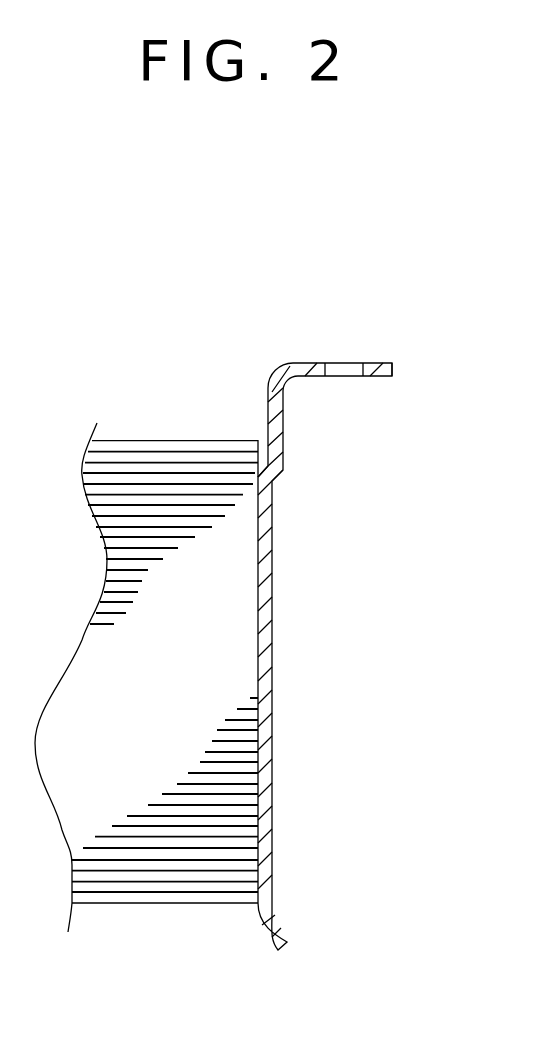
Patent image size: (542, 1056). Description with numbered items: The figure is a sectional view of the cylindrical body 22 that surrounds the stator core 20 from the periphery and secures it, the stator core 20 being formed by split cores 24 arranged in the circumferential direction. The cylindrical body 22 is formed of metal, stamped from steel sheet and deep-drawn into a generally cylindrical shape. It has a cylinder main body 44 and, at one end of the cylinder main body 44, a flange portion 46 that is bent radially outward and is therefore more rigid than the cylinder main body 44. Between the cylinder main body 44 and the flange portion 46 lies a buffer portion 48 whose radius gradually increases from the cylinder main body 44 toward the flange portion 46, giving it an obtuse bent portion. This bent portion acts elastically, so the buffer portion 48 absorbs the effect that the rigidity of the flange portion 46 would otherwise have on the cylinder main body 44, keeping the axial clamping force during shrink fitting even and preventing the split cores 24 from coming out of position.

The stator core 20 is at (268, 310).
The cylindrical body 22 is at (293, 583).
The split core 24 is at (98, 898).
The cylinder main body 44 is at (273, 693).
The flange portion 46 is at (376, 366).
The buffer portion 48 is at (283, 450).